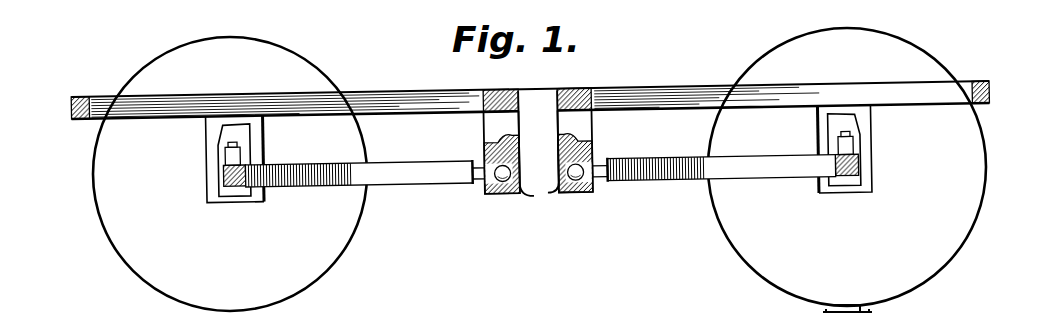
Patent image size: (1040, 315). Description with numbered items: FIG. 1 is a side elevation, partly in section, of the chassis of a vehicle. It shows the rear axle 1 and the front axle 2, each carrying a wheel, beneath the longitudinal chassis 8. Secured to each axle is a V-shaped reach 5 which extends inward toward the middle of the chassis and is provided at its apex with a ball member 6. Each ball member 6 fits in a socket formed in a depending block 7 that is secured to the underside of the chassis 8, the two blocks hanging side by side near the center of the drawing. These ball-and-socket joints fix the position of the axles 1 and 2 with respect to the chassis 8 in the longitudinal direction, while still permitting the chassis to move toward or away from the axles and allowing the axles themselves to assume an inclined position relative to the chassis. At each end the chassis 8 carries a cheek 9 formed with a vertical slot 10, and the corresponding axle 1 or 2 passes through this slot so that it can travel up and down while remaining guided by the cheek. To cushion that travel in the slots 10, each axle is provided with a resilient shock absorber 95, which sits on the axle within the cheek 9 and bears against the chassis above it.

The rear axle 1 is at (223, 183).
The front axle 2 is at (855, 190).
The V-shaped reach 5 is at (412, 183).
The ball member 6 is at (551, 190).
The depending block 7 is at (492, 126).
The chassis 8 is at (409, 92).
The cheek 9 is at (206, 144).
The vertical slot 10 is at (248, 151).
The resilient shock absorber 95 is at (243, 142).